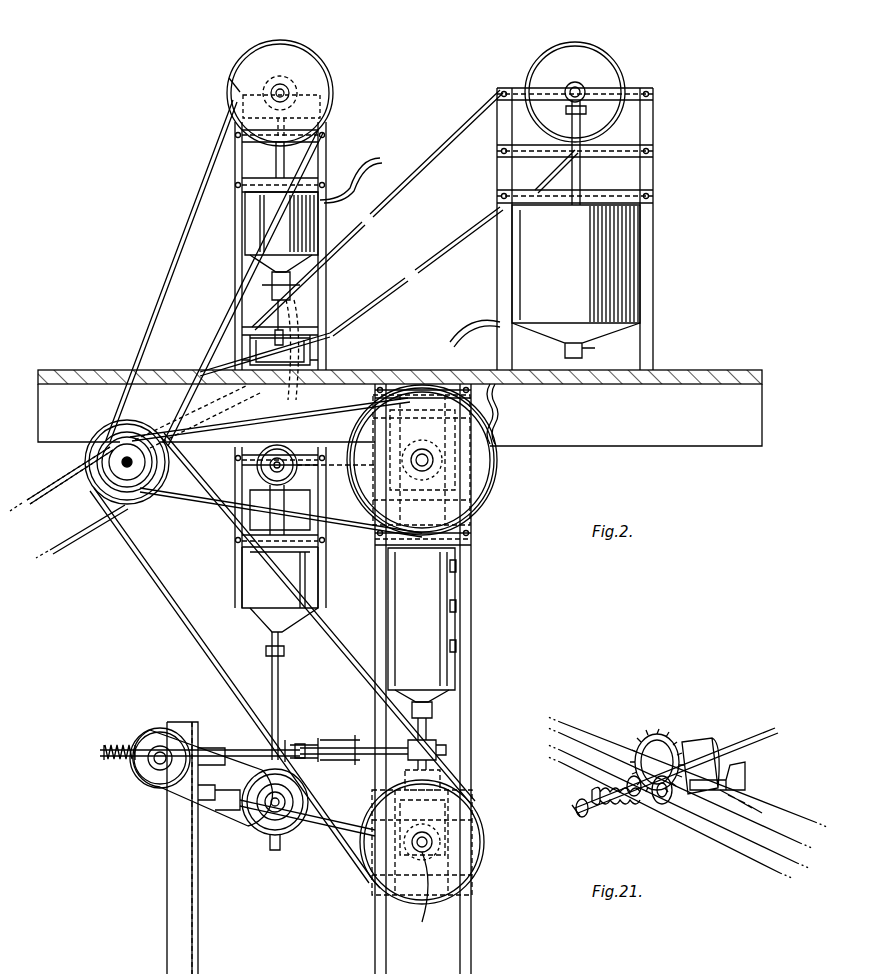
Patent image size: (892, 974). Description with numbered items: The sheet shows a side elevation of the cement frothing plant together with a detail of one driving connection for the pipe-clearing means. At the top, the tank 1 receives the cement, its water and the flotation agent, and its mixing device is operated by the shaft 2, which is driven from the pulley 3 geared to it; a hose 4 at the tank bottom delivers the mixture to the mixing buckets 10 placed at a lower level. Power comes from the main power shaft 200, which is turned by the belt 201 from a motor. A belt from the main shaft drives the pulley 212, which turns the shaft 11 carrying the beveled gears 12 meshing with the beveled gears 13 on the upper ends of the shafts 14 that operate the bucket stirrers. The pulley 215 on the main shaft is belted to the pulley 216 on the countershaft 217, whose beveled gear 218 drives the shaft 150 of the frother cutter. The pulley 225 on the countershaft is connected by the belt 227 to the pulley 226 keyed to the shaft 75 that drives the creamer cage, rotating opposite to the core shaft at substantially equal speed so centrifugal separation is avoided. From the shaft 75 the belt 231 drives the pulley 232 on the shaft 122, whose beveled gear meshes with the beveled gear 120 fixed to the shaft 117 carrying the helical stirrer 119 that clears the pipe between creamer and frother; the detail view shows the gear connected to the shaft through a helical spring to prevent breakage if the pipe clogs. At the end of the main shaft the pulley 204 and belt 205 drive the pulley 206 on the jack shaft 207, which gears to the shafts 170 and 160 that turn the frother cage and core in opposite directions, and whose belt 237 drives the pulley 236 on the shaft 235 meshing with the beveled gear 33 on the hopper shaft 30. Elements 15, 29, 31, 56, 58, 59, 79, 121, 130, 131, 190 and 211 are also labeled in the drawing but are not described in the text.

In FIG. 2, the tank 1 is at (620, 270).
In FIG. 2, the shaft 2 is at (580, 177).
In FIG. 2, the pulley 3 is at (612, 75).
In FIG. 2, the hose 4 is at (381, 170).
In FIG. 2, the mixing buckets 10 is at (237, 240).
In FIG. 2, the shaft 11 is at (292, 84).
In FIG. 2, the beveled gears 12 is at (304, 82).
In FIG. 2, the beveled gears 13 is at (235, 84).
In FIG. 2, the shafts 14 is at (275, 162).
In FIG. 2, the box 15 is at (270, 498).
In FIG. 2, the valve 29 is at (315, 318).
In FIG. 2, the shaft 30 is at (280, 350).
In FIG. 2, the hopper 31 is at (255, 598).
In FIG. 2, the beveled gear 33 is at (336, 468).
In FIG. 2, the coupling 56 is at (324, 740).
In FIG. 2, the pulley 58 is at (440, 463).
In FIG. 2, the rod 59 is at (330, 752).
In FIG. 2, the shaft 75 is at (262, 824).
In FIG. 2, the pipe 79 is at (280, 688).
In FIG. 2, the shaft 117 is at (232, 746).
In FIG. 21, the shaft 117 is at (735, 740).
In FIG. 2, the helical stirrer 119 is at (325, 738).
In FIG. 2, the beveled gear 120 is at (195, 714).
In FIG. 21, the beveled gear 120 is at (665, 738).
In FIG. 2, the worm 121 is at (112, 745).
In FIG. 21, the worm 121 is at (612, 808).
In FIG. 2, the shaft and beveled gear 122 is at (148, 764).
In FIG. 21, the shaft and beveled gear 122 is at (640, 798).
In FIG. 2, the nozzle 130 is at (432, 712).
In FIG. 2, the valve 131 is at (440, 750).
In FIG. 2, the shaft 150 is at (460, 830).
In FIG. 2, the shaft 160 is at (478, 520).
In FIG. 2, the shaft 170 is at (410, 427).
In FIG. 2, the bracket 190 is at (470, 800).
In FIG. 2, the main power shaft 200 is at (110, 470).
In FIG. 2, the belt 201 is at (88, 540).
In FIG. 2, the pulley 204 is at (160, 498).
In FIG. 2, the belt 205 is at (225, 508).
In FIG. 2, the pulley 206 is at (492, 494).
In FIG. 2, the jack shaft 207 is at (500, 445).
In FIG. 2, the belt 211 is at (188, 200).
In FIG. 2, the pulley 212 is at (290, 62).
In FIG. 2, the pulley 215 is at (196, 668).
In FIG. 2, the pulley 216 is at (445, 886).
In FIG. 2, the countershaft 217 is at (426, 898).
In FIG. 2, the beveled gear 218 is at (440, 850).
In FIG. 2, the pulley 225 is at (372, 885).
In FIG. 2, the pulley 226 is at (290, 850).
In FIG. 2, the belt 227 is at (340, 843).
In FIG. 2, the belt 231 is at (190, 790).
In FIG. 2, the pulley 232 is at (150, 784).
In FIG. 2, the shaft 235 is at (262, 458).
In FIG. 2, the pulley 236 is at (283, 445).
In FIG. 2, the belt 237 is at (320, 436).